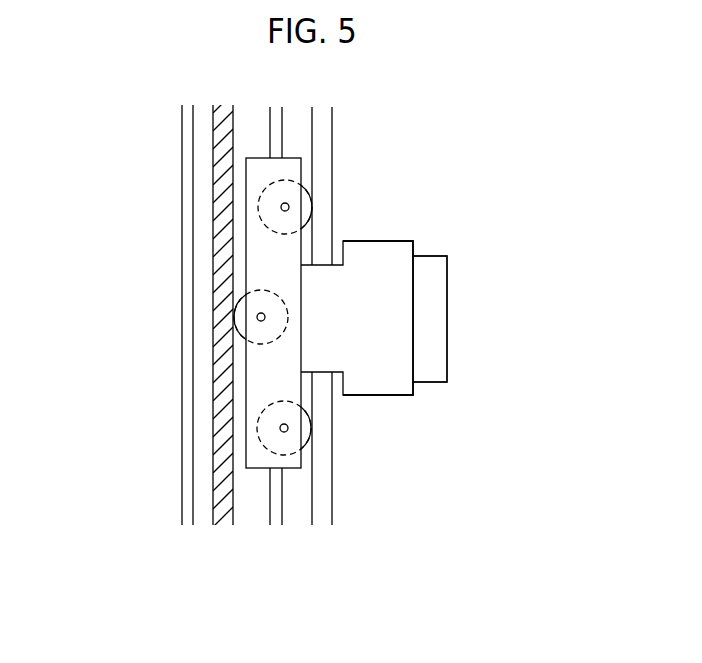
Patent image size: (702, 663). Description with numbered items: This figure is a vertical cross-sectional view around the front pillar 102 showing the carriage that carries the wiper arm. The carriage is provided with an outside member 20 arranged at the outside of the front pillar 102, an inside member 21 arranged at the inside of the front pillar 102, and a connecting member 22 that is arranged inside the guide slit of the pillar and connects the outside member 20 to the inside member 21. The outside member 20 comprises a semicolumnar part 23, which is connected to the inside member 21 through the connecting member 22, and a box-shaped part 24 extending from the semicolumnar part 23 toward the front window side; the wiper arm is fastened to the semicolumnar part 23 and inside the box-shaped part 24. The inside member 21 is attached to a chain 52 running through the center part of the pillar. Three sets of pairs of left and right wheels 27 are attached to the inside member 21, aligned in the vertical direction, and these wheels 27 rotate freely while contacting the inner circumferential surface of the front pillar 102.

The outside member 20 is at (528, 313).
The inside member 21 is at (277, 253).
The connecting member 22 is at (324, 318).
The semicolumnar part 23 is at (380, 334).
The box-shaped part 24 is at (425, 366).
The wheels 27 is at (307, 188).
The chain 52 is at (183, 228).
The front pillar 102 is at (212, 122).